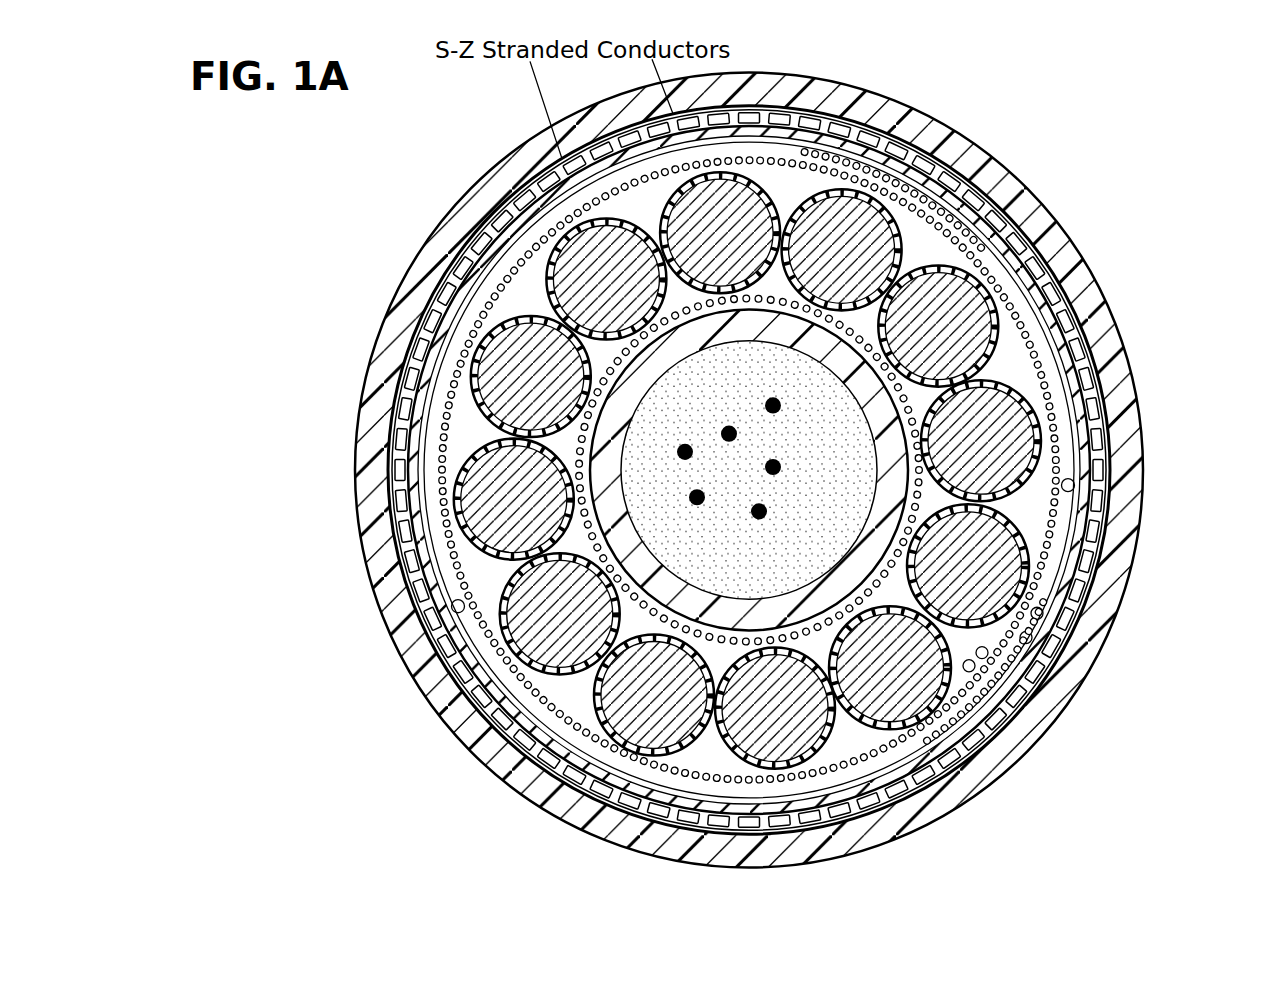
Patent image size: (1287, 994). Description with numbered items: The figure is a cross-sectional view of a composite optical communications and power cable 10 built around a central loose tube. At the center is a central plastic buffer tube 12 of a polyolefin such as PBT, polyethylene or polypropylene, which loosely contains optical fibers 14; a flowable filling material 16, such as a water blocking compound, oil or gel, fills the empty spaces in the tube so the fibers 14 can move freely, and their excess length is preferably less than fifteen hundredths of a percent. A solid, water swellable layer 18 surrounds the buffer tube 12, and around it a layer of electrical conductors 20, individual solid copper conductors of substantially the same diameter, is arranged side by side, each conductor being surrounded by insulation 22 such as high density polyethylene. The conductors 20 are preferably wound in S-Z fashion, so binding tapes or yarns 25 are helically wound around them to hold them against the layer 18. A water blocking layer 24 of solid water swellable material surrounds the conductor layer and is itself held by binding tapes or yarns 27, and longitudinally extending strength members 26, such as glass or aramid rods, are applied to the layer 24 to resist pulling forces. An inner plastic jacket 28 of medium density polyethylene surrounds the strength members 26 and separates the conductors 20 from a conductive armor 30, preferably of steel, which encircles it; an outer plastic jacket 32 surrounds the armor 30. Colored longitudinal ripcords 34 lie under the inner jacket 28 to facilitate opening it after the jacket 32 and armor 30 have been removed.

The composite optical communications and power cable 10 is at (933, 113).
The central plastic buffer tube 12 is at (878, 415).
The optical fibers 14 is at (765, 512).
The flowable filling material 16 is at (762, 575).
The solid, water swellable layer 18 is at (597, 386).
The electrical conductors 20 is at (661, 470).
The insulation 22 is at (500, 652).
The water blocking layer 24 is at (470, 329).
The binding tapes or yarns 25 is at (975, 667).
The strength members 26 is at (990, 248).
The binding tapes or yarns 27 is at (1032, 638).
The inner plastic jacket 28 is at (1073, 575).
The conductive armor 30 is at (1098, 505).
The outer plastic jacket 32 is at (448, 222).
The longitudinal ripcords 34 is at (1075, 484).